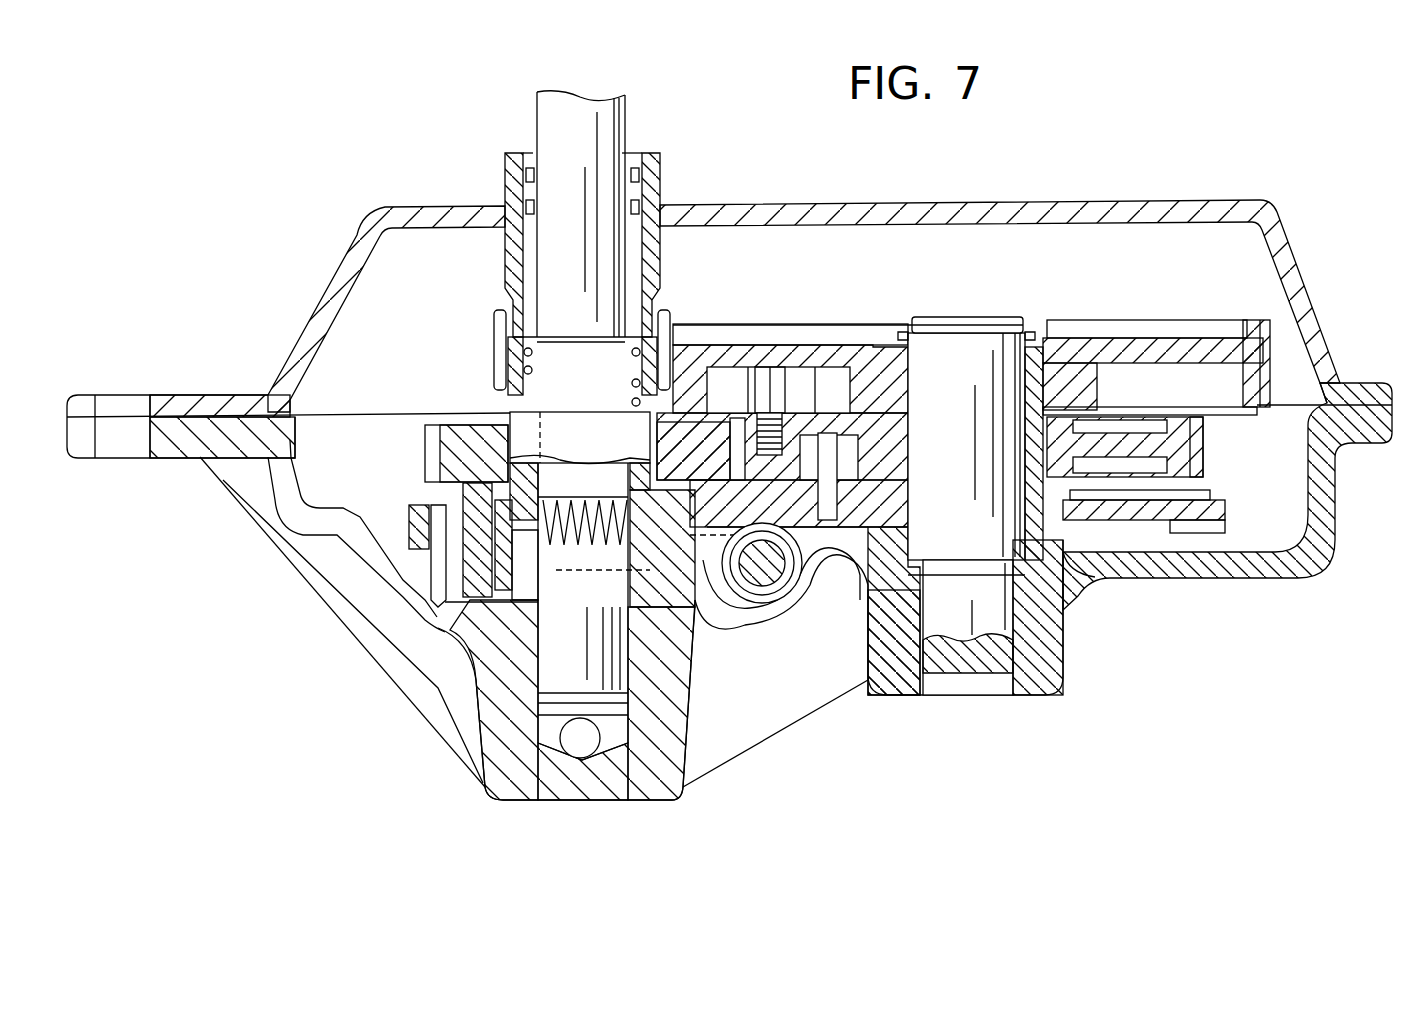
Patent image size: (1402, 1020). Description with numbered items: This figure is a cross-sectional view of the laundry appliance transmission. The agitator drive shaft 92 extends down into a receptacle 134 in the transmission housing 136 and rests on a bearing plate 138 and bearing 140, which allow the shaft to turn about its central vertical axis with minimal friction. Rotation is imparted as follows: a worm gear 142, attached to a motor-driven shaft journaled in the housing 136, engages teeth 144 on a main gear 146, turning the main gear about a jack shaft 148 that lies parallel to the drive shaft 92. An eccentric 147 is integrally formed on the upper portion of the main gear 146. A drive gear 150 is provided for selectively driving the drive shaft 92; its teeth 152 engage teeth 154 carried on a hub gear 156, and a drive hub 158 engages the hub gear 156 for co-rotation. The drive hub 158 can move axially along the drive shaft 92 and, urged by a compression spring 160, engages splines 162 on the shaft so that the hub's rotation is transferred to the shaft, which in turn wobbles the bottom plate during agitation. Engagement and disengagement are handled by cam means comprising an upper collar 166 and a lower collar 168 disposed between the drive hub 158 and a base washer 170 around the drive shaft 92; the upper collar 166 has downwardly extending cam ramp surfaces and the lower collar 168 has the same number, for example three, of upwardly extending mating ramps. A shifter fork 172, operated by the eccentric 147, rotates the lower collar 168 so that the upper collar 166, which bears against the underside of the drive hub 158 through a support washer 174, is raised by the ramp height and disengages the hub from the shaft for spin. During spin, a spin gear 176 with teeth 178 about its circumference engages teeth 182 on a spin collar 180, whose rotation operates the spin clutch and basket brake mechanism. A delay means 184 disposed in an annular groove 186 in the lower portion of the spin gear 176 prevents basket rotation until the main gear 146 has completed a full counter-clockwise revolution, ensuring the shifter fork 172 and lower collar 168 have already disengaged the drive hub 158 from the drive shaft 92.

The drive shaft 92 is at (617, 130).
The receptacle 134 is at (622, 753).
The housing 136 is at (377, 663).
The bearing plate 138 is at (630, 707).
The bearing 140 is at (573, 747).
The worm gear 142 is at (793, 595).
The teeth 144 is at (696, 508).
The main gear 146 is at (1147, 525).
The eccentric 147 is at (1070, 505).
The jack shaft 148 is at (992, 617).
The drive gear 150 is at (1120, 437).
The teeth 152 is at (1205, 448).
The teeth 154 is at (427, 460).
The hub gear 156 is at (445, 424).
The drive hub 158 is at (500, 405).
The compression spring 160 is at (510, 370).
The splines 162 is at (568, 540).
The upper collar 166 is at (690, 645).
The lower collar 168 is at (427, 600).
The base washer 170 is at (497, 603).
The shifter fork 172 is at (712, 610).
The support washer 174 is at (409, 517).
The spin gear 176 is at (1140, 340).
The teeth 178 is at (1273, 380).
The spin collar 180 is at (685, 325).
The teeth 182 is at (662, 312).
The delay means 184 is at (828, 382).
The annular groove 186 is at (720, 368).